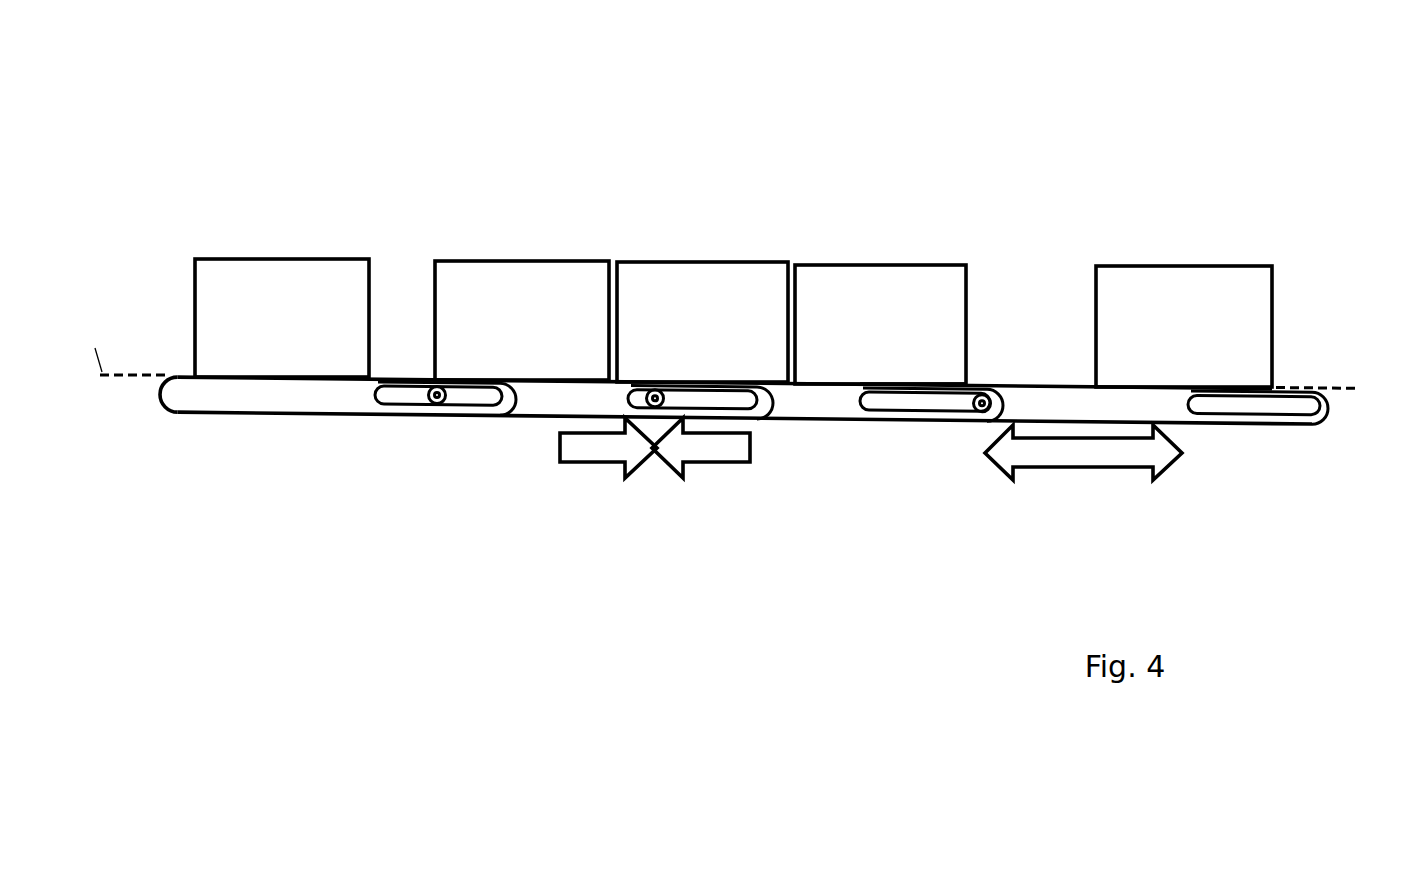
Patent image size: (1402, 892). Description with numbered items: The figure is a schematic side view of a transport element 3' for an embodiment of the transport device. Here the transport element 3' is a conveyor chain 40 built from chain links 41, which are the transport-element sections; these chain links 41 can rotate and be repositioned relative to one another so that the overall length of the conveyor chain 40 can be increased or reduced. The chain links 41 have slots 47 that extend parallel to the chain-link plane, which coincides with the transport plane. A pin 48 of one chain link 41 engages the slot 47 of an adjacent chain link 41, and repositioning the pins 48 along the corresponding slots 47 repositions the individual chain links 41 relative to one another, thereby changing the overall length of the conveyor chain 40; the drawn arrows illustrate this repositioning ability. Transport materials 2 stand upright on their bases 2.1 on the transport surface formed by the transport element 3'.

The transport element 3' is at (714, 302).
The conveyor chain 40 is at (307, 140).
The chain link 41 is at (238, 400).
The slot 47 is at (397, 393).
The pin 48 is at (437, 405).
The transport material 2 is at (206, 258).
The base 2.1 is at (878, 383).